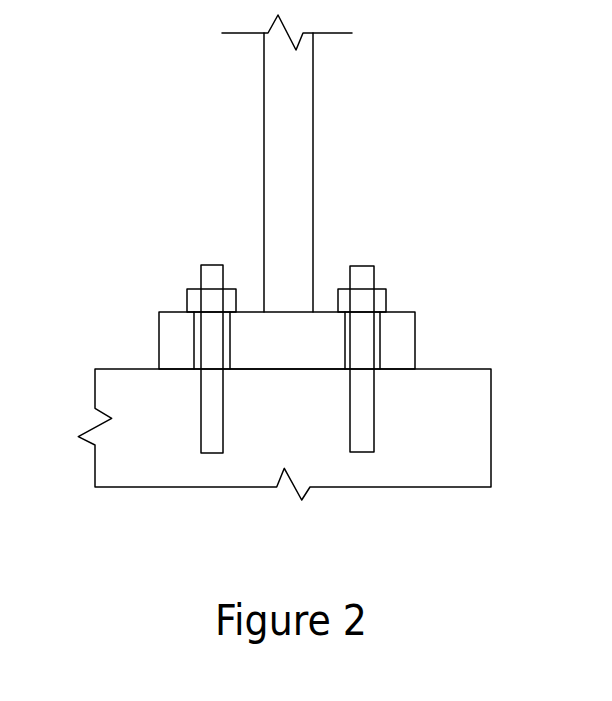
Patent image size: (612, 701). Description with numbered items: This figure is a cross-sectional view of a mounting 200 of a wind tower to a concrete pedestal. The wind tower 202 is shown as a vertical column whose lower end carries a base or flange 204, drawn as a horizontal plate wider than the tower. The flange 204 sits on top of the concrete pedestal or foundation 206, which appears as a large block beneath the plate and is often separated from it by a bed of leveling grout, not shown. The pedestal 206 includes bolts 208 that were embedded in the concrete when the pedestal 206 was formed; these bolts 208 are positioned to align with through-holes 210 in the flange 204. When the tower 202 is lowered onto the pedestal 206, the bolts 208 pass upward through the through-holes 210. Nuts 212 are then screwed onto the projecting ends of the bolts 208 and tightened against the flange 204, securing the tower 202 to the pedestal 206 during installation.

The mounting 200 is at (99, 513).
The wind tower 202 is at (313, 131).
The flange 204 is at (415, 338).
The pedestal 206 is at (491, 427).
The bolts 208 is at (360, 266).
The through-holes 210 is at (194, 340).
The nuts 212 is at (386, 298).